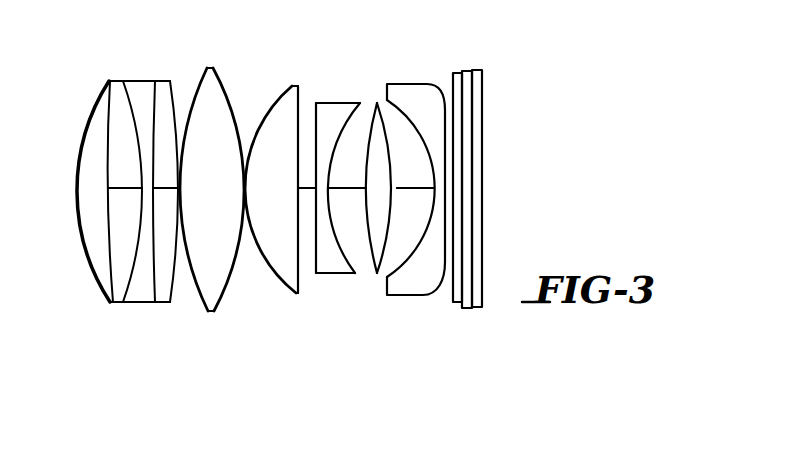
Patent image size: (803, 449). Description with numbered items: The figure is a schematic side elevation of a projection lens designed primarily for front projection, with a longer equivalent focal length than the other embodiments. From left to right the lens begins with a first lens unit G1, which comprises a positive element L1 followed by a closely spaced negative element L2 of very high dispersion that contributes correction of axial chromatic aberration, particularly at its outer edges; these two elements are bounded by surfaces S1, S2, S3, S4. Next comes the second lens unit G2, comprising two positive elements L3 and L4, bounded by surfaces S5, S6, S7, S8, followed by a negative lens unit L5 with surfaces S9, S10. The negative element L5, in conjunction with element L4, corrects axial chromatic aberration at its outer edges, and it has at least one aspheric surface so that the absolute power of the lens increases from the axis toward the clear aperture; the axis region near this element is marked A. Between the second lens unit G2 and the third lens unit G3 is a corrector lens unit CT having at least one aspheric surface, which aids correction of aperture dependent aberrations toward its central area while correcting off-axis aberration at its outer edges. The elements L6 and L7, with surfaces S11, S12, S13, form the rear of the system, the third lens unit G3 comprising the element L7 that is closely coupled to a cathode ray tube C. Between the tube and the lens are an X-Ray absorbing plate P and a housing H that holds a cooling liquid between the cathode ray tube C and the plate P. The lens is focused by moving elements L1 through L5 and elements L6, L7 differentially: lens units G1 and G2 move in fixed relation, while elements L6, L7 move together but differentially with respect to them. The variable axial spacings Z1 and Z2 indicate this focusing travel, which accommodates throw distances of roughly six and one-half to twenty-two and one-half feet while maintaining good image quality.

The first lens unit G1 is at (183, 42).
The second lens unit G2 is at (362, 43).
The third lens unit G3 is at (448, 45).
The lens element L1 is at (98, 103).
The lens element L2 is at (150, 81).
The positive element L3 is at (213, 86).
The positive element L4 is at (281, 100).
The negative lens unit L5 is at (332, 103).
The lens element L6 is at (375, 103).
The lens element L7 is at (415, 83).
The lens surface S1 is at (90, 254).
The lens surface S2 is at (117, 241).
The lens surface S3 is at (118, 270).
The lens surface S4 is at (163, 262).
The lens surface S5 is at (191, 284).
The lens surface S6 is at (228, 272).
The lens surface S7 is at (264, 268).
The lens surface S8 is at (298, 279).
The lens surface S9 is at (314, 257).
The lens surface S10 is at (349, 248).
The lens surface S11 is at (364, 258).
The lens surface S12 is at (389, 268).
The lens surface S13 is at (424, 251).
The aperture stop A is at (353, 185).
The corrector lens unit CT is at (393, 178).
The focusing travel spacing Z1 is at (358, 192).
The focusing travel spacing Z2 is at (444, 187).
The X-Ray absorbing plate P is at (453, 303).
The housing H is at (468, 309).
The cathode ray tube C is at (481, 298).